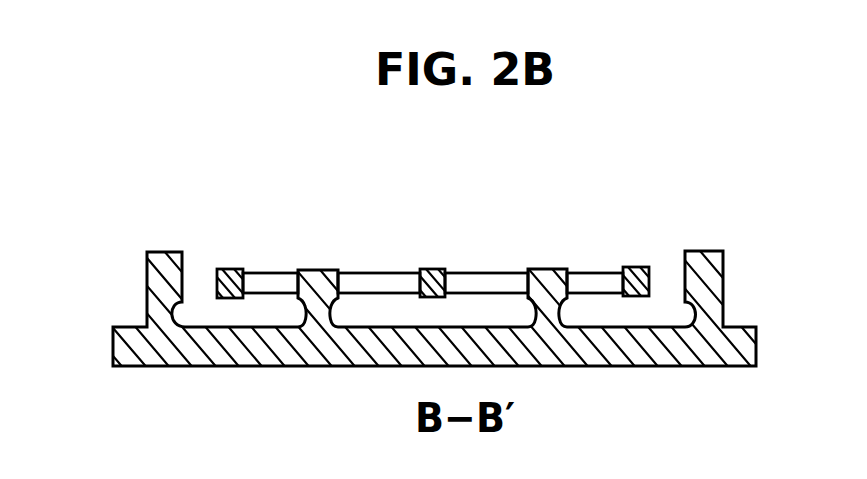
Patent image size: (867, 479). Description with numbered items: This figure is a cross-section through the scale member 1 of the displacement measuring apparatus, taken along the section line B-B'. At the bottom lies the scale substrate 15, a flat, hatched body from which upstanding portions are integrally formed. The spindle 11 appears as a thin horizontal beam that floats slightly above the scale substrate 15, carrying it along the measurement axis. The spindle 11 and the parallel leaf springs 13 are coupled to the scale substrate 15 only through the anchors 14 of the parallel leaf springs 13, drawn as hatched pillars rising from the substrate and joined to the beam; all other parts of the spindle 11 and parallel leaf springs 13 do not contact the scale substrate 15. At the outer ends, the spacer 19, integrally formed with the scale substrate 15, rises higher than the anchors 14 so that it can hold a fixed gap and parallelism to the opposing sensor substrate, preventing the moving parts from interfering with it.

The scale member 1 is at (745, 260).
The spindle 11 is at (432, 267).
The parallel leaf springs 13 is at (638, 266).
The anchors 14 is at (317, 268).
The scale substrate 15 is at (755, 343).
The spacer 19 is at (163, 251).